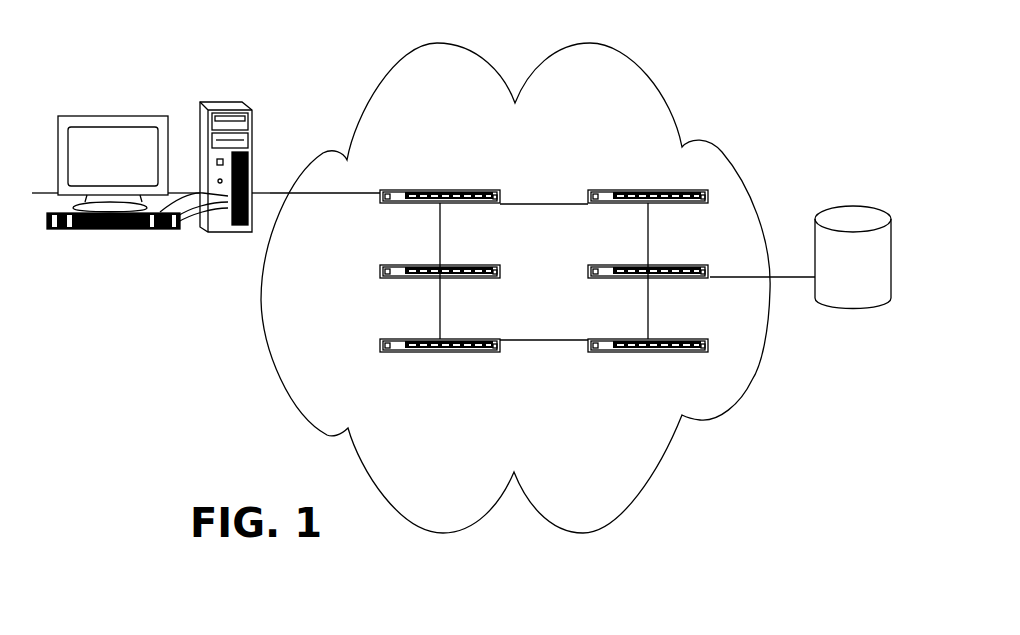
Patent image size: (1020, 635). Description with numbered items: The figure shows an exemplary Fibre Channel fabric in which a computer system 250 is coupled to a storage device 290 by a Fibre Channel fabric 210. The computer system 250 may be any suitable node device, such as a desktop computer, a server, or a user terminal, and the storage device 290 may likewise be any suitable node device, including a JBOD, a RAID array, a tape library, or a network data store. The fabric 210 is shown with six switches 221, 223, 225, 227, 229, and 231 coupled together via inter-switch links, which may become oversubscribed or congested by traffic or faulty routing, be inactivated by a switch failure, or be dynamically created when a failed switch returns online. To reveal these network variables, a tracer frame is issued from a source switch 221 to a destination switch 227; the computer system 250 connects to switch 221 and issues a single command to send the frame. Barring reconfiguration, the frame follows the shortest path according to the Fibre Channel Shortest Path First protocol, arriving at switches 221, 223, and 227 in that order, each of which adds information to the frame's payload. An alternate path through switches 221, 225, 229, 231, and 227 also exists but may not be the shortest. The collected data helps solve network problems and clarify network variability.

The Fibre Channel fabric 210 is at (262, 355).
The switch 221 is at (380, 205).
The switch 223 is at (588, 205).
The switch 225 is at (380, 280).
The switch 227 is at (588, 280).
The switch 229 is at (380, 354).
The switch 231 is at (588, 354).
The computer system 250 is at (113, 229).
The storage device 290 is at (860, 312).